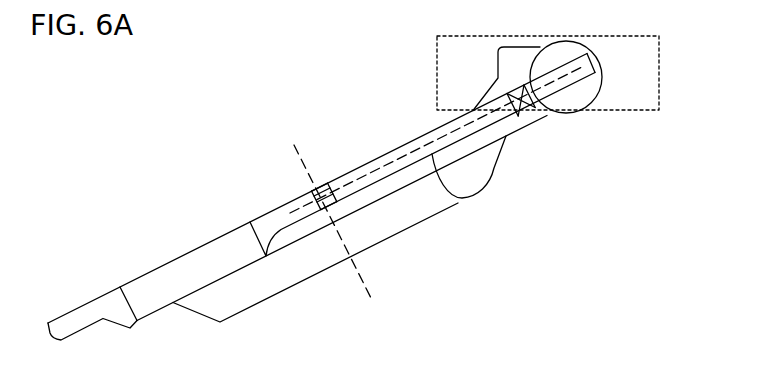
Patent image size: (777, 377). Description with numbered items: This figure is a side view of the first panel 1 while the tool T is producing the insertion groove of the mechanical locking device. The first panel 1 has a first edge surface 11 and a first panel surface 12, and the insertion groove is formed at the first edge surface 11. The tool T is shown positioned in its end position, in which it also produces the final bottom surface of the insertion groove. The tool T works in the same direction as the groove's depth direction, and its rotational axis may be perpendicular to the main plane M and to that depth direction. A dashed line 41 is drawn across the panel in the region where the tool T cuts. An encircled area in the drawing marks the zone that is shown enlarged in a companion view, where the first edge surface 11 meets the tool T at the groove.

The first panel 1 is at (641, 63).
The first edge surface 11 is at (436, 70).
The first panel surface 12 is at (622, 110).
The section plane 41 is at (362, 280).
The main plane M is at (546, 100).
The tool T is at (460, 198).